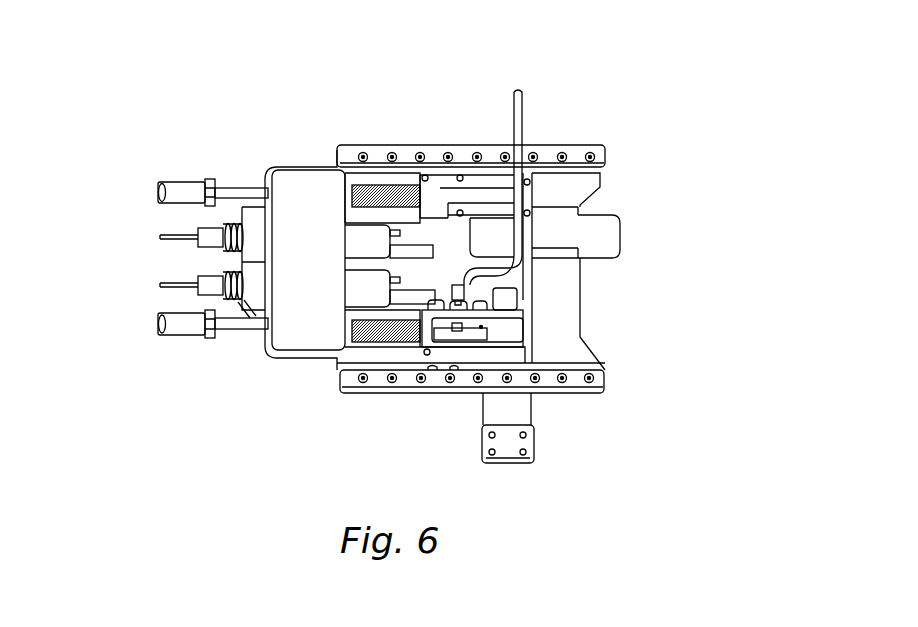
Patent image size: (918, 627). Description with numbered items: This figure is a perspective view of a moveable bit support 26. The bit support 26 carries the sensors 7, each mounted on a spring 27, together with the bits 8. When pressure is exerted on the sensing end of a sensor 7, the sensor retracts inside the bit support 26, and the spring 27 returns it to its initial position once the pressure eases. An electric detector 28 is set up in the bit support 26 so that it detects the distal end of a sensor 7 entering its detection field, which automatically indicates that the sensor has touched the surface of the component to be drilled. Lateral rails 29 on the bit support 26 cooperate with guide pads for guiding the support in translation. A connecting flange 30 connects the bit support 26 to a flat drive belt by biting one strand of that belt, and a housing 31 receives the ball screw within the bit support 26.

The sensor 7 is at (180, 185).
The bit 8 is at (163, 238).
The bit support 26 is at (364, 114).
The spring 27 is at (363, 195).
The electric detector 28 is at (455, 285).
The lateral rail 29 is at (576, 150).
The connecting flange 30 is at (507, 445).
The housing 31 is at (614, 237).